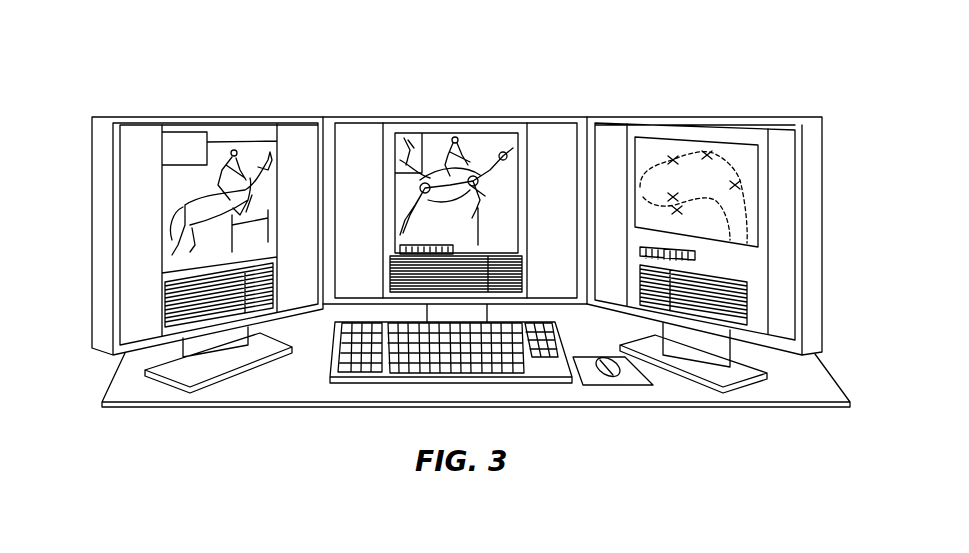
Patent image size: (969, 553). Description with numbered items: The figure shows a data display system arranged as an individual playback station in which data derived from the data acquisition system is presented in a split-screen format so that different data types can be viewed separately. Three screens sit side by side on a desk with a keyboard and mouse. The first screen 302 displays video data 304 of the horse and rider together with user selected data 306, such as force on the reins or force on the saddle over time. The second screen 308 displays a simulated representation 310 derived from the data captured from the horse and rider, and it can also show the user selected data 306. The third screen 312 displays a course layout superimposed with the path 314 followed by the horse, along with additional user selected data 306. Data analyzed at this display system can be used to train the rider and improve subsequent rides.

The first screen 302 is at (191, 117).
The video data 304 is at (173, 200).
The user selected data 306 is at (420, 275).
The second screen 308 is at (522, 118).
The simulated representation 310 is at (463, 142).
The third screen 312 is at (780, 118).
The path 314 is at (680, 153).